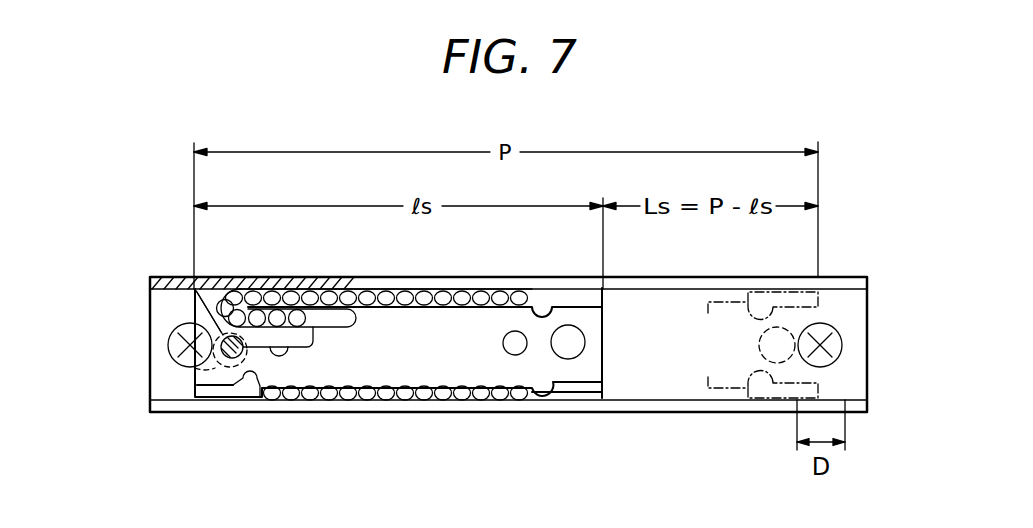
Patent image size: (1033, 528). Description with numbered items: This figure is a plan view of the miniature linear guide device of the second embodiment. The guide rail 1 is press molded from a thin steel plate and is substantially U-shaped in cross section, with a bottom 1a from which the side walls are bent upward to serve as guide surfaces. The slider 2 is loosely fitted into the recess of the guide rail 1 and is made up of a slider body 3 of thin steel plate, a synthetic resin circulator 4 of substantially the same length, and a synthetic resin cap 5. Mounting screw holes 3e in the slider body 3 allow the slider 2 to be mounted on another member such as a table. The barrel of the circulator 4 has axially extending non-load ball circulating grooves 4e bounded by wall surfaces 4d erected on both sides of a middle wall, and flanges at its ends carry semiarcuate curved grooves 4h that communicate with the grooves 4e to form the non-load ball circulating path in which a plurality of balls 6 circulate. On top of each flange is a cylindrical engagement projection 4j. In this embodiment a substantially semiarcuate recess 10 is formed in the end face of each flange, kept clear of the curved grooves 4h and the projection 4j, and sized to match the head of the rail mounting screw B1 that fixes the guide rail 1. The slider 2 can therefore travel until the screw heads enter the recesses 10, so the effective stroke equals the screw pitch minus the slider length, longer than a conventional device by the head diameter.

The guide rail 1 is at (672, 412).
The bottom 1a is at (158, 315).
The slider 2 is at (428, 378).
The slider body 3 is at (218, 375).
The mounting screw holes 3e is at (285, 357).
The circulator 4 is at (210, 293).
The cylindrical engagement projection 4j is at (193, 284).
The semiarcuate curved groove 4h is at (223, 300).
The wall surfaces 4d is at (289, 315).
The non-load ball circulating grooves 4e is at (348, 302).
The cap 5 is at (250, 390).
The balls 6 is at (497, 293).
The semiarcuate recess 10 is at (190, 375).
The rail mounting screw B1 is at (176, 348).